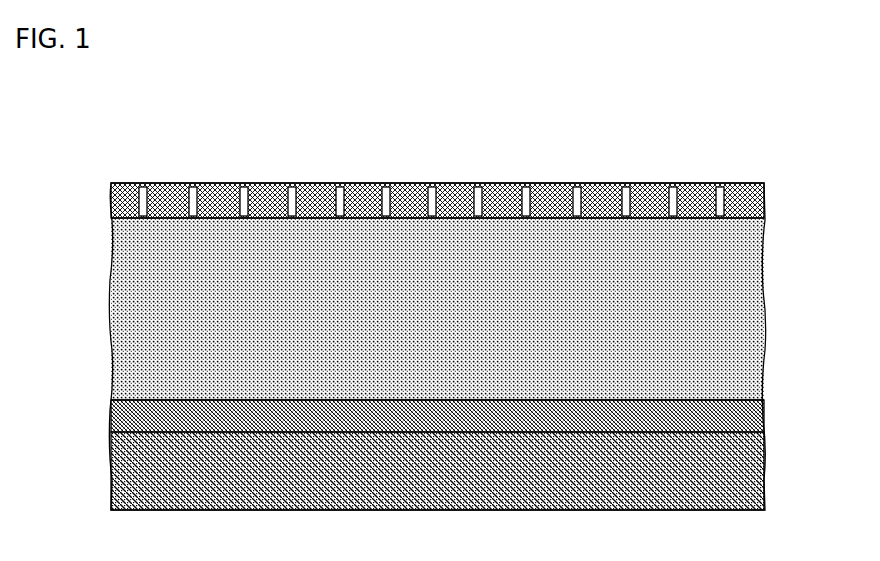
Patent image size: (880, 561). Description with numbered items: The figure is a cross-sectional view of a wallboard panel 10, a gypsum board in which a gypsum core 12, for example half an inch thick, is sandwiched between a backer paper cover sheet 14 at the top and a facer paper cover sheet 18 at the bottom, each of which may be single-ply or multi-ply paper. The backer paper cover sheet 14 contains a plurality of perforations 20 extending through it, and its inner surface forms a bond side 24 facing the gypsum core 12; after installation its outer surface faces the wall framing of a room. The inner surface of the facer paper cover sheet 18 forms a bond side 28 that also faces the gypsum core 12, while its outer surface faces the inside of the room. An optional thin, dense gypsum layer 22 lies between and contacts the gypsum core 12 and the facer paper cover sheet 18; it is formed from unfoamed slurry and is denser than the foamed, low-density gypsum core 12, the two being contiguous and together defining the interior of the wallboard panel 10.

The wallboard panel 10 is at (790, 232).
The gypsum core 12 is at (166, 314).
The backer paper cover sheet 14 is at (159, 190).
The facer paper cover sheet 18 is at (112, 480).
The perforations 20 is at (292, 183).
The thin, dense gypsum layer 22 is at (142, 399).
The bond side 24 is at (110, 209).
The bond side 28 is at (112, 428).